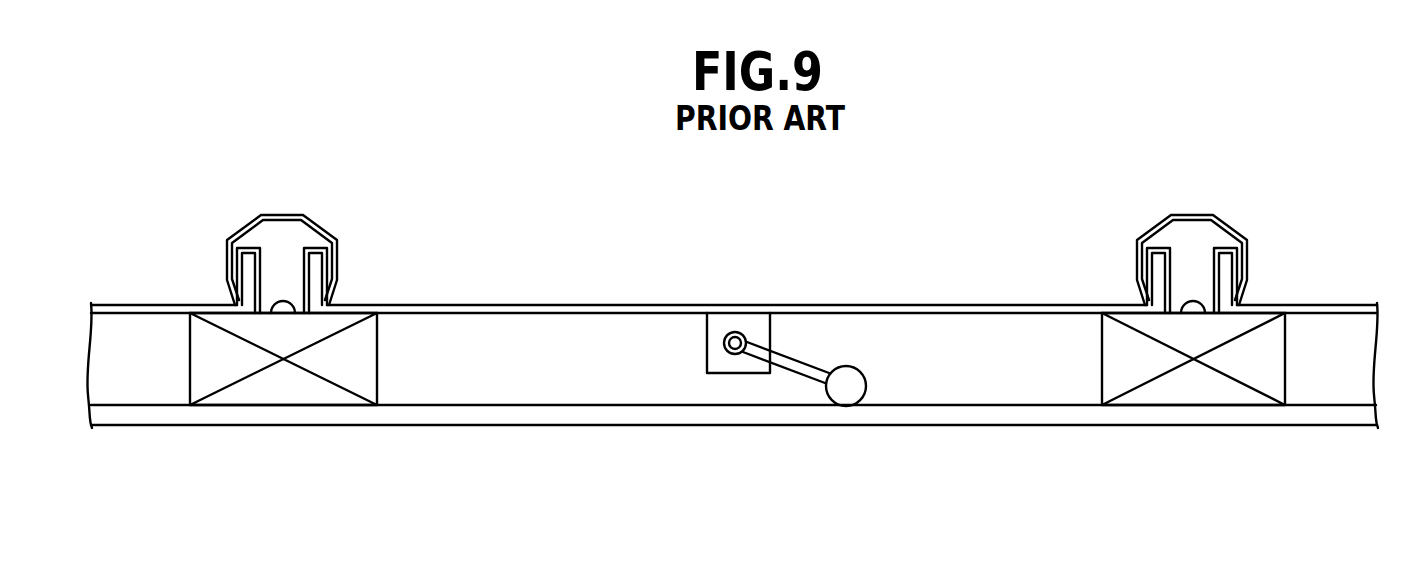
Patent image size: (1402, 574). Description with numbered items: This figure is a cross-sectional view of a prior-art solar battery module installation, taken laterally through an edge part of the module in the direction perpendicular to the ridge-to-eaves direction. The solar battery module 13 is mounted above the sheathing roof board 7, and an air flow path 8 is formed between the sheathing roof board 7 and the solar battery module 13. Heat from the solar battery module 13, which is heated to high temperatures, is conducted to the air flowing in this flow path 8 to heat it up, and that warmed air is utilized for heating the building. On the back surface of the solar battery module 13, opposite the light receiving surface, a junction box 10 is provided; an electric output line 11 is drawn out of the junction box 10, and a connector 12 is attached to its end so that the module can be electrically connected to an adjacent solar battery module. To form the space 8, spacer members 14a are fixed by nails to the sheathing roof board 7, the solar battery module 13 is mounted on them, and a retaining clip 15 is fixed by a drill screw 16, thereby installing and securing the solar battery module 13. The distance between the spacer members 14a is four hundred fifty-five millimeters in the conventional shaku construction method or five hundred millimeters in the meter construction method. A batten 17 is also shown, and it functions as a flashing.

The sheathing roof board 7 is at (1025, 418).
The air flow path 8 is at (973, 367).
The junction box 10 is at (720, 367).
The electric output line 11 is at (805, 372).
The connector 12 is at (851, 398).
The solar battery module 13 is at (910, 296).
The spacer member 14a is at (282, 400).
The retaining clip 15 is at (1213, 278).
The drill screw 16 is at (283, 300).
The batten 17 is at (318, 224).